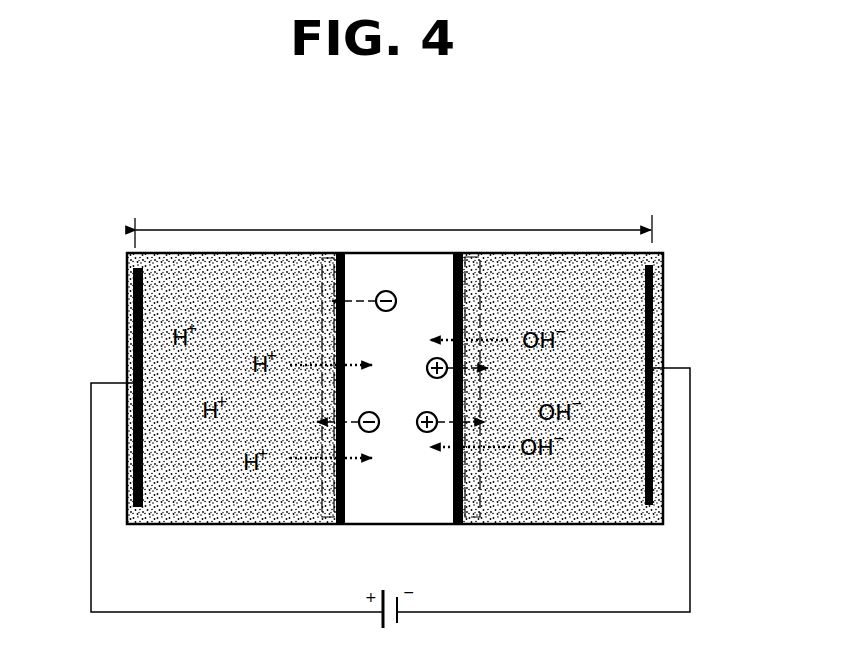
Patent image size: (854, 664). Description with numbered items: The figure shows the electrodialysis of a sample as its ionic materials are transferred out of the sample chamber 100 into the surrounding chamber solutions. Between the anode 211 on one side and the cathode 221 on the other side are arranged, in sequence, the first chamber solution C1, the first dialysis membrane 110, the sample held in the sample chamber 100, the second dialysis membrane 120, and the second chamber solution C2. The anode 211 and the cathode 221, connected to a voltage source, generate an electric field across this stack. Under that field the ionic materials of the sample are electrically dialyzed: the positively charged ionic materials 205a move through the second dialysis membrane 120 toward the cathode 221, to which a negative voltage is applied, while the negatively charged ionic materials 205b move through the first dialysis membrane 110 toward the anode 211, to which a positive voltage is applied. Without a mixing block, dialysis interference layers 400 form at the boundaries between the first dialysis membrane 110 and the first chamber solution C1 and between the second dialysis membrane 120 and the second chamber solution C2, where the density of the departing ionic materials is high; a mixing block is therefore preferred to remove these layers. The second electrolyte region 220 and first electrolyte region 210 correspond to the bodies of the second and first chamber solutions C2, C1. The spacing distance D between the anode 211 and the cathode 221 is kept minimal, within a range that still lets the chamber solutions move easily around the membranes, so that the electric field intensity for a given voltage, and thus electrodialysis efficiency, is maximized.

The sample chamber 100 is at (423, 282).
The first dialysis membrane 110 is at (340, 255).
The second dialysis membrane 120 is at (460, 255).
The first dialysis membrane 210 is at (247, 289).
The anode 211 is at (145, 268).
The second electrolyte (alkaline) 220 is at (548, 281).
The cathode 221 is at (646, 270).
The positively charged ionic materials 205a is at (428, 432).
The negatively charged ionic materials 205b is at (373, 432).
The dialysis interference layers 400 is at (328, 518).
The first chamber solution C1 is at (215, 265).
The second chamber solution C2 is at (608, 307).
The spacing distance D is at (393, 224).